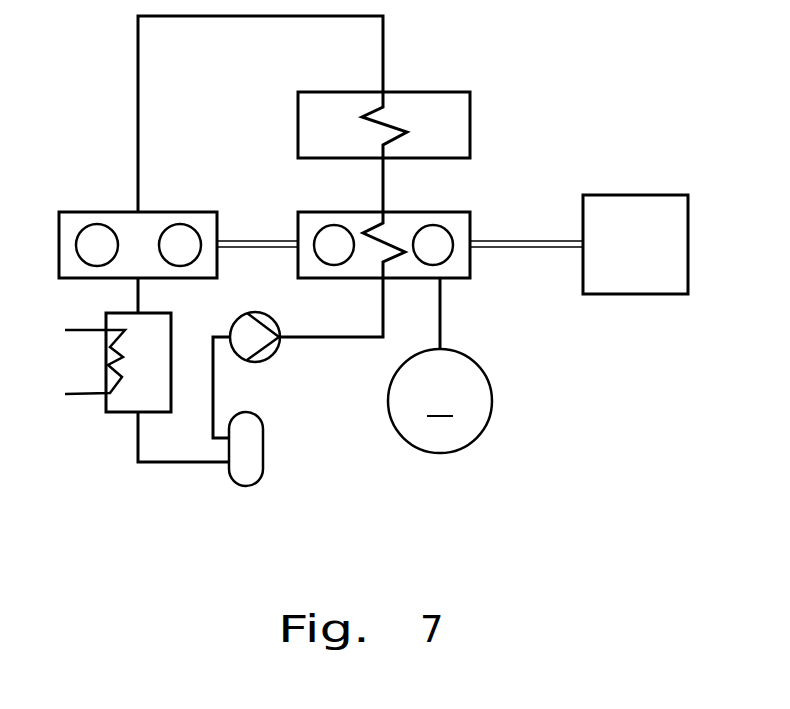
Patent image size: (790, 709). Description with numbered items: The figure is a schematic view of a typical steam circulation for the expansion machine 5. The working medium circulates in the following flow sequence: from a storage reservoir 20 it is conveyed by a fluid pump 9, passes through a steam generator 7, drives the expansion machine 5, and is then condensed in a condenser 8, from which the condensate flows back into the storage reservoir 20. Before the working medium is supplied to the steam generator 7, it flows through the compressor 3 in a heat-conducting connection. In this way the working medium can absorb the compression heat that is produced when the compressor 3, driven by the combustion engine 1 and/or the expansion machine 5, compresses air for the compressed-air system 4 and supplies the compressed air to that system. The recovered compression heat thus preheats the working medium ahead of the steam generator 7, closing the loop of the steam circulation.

The combustion engine 1 is at (634, 281).
The compressor 3 is at (462, 232).
The compressed-air system 4 is at (440, 401).
The expansion machine 5 is at (78, 217).
The steam generator 7 is at (431, 103).
The condenser 8 is at (125, 407).
The fluid pump 9 is at (268, 352).
The storage reservoir 20 is at (257, 462).